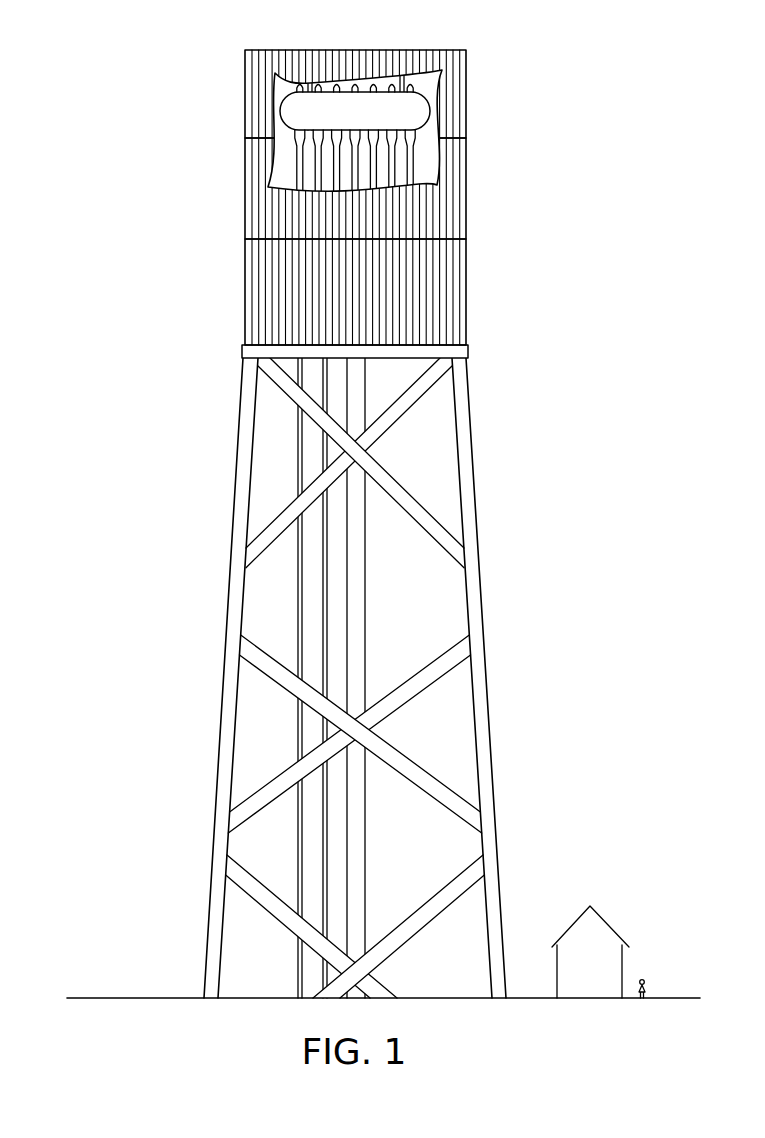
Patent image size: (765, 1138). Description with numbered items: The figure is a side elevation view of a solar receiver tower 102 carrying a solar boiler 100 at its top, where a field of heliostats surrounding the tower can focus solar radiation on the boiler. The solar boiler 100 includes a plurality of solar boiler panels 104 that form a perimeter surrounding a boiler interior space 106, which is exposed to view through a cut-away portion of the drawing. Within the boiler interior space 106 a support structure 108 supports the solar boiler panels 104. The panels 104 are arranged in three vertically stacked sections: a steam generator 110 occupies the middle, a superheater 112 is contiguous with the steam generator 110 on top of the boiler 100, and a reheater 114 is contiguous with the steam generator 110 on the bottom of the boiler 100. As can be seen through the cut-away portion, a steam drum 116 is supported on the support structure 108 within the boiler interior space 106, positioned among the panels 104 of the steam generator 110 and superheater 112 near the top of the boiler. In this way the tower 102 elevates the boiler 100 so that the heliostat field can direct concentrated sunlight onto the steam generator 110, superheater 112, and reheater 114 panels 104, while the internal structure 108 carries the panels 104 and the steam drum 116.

The solar boiler 100 is at (300, 503).
The solar receiver tower 102 is at (231, 601).
The solar boiler panels 104 is at (368, 176).
The boiler interior space 106 is at (320, 106).
The support structure 108 is at (279, 141).
The steam generator 110 is at (471, 187).
The superheater 112 is at (471, 95).
The reheater 114 is at (471, 291).
The steam drum 116 is at (347, 102).